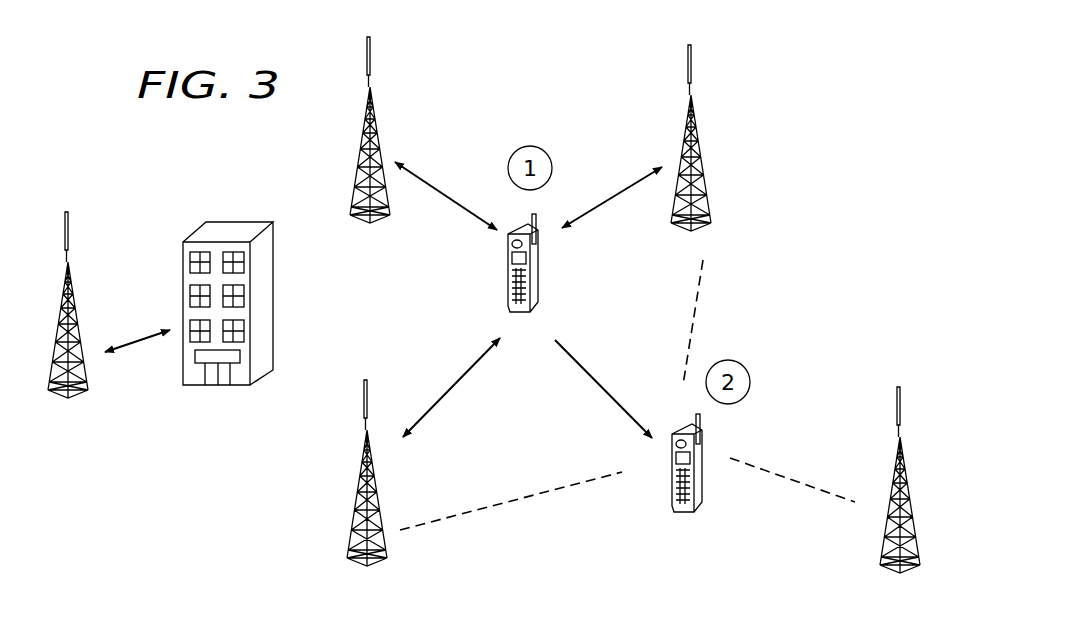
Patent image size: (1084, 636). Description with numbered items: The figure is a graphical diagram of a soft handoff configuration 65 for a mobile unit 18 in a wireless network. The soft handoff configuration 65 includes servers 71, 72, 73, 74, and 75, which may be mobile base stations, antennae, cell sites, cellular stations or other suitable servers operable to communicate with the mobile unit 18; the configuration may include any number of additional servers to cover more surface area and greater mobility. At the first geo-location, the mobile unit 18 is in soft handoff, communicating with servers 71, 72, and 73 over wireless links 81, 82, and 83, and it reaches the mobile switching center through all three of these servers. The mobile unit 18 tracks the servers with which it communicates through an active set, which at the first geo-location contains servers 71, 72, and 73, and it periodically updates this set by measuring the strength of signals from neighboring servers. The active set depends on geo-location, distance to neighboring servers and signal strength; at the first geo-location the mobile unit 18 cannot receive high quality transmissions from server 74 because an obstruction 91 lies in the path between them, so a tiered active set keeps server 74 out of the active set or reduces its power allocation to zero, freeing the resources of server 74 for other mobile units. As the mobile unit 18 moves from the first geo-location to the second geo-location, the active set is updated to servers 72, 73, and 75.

The mobile unit 18 is at (508, 258).
The soft handoff configuration 65 is at (836, 143).
The server 71 is at (371, 56).
The server 72 is at (692, 60).
The server 73 is at (368, 400).
The server 74 is at (69, 230).
The server 75 is at (901, 407).
The wireless link 81 is at (440, 192).
The wireless link 82 is at (624, 190).
The wireless link 83 is at (446, 396).
The obstruction 91 is at (228, 232).